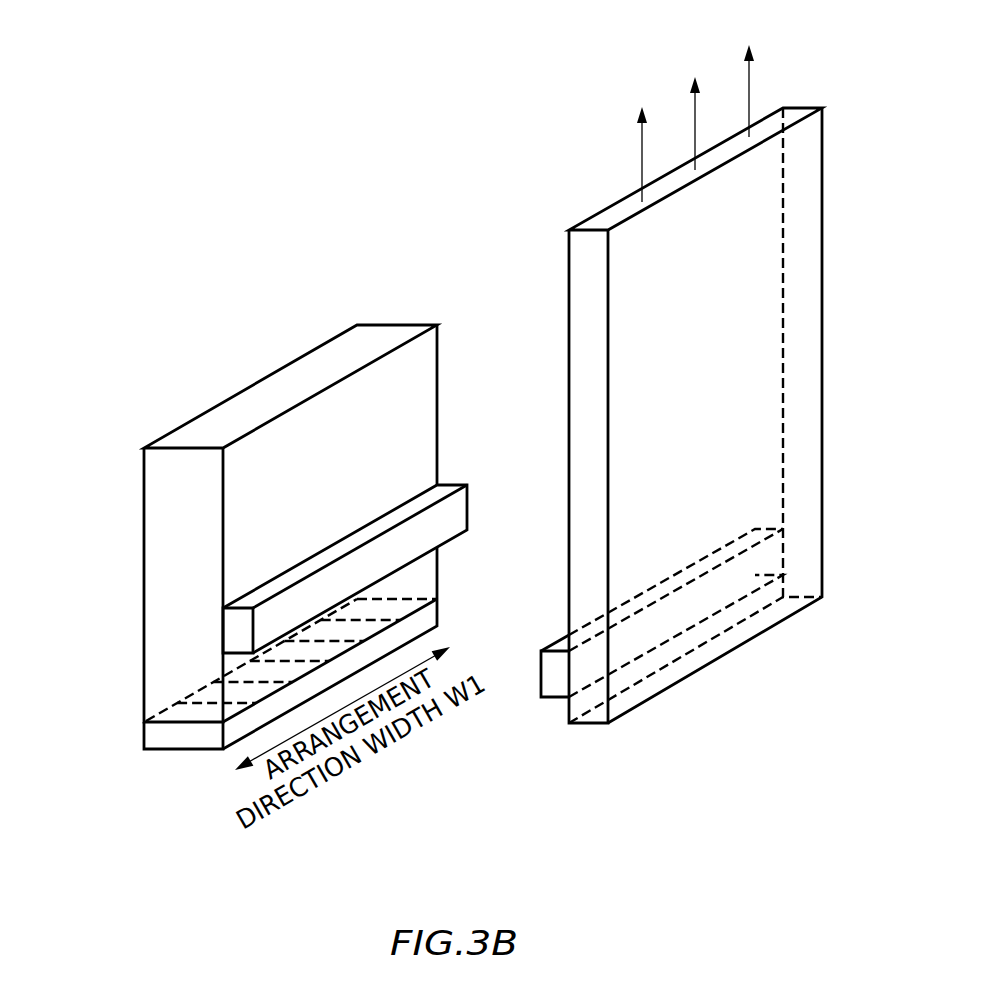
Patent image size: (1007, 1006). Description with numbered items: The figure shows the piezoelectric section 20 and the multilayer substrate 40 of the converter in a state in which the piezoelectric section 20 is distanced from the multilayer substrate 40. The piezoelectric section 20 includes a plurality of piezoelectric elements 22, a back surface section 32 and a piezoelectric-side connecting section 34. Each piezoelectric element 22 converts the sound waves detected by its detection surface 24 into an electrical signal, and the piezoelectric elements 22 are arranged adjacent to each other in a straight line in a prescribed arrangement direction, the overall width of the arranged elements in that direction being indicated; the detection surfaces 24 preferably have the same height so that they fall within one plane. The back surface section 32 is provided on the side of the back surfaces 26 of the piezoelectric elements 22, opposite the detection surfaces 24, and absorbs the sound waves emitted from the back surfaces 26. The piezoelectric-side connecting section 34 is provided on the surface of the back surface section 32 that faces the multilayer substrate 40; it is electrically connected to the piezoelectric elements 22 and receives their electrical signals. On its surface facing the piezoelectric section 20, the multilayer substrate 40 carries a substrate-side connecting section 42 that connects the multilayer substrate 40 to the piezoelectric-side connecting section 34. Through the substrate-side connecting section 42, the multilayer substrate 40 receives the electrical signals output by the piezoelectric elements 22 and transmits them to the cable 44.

The piezoelectric section 20 is at (78, 648).
The piezoelectric elements 22 is at (153, 735).
The detection surface 24 is at (182, 750).
The back surface 26 is at (184, 721).
The back surface section 32 is at (153, 652).
The piezoelectric-side connecting section 34 is at (445, 487).
The multilayer substrate 40 is at (822, 476).
The substrate-side connecting section 42 is at (556, 645).
The cable 44 is at (640, 163).